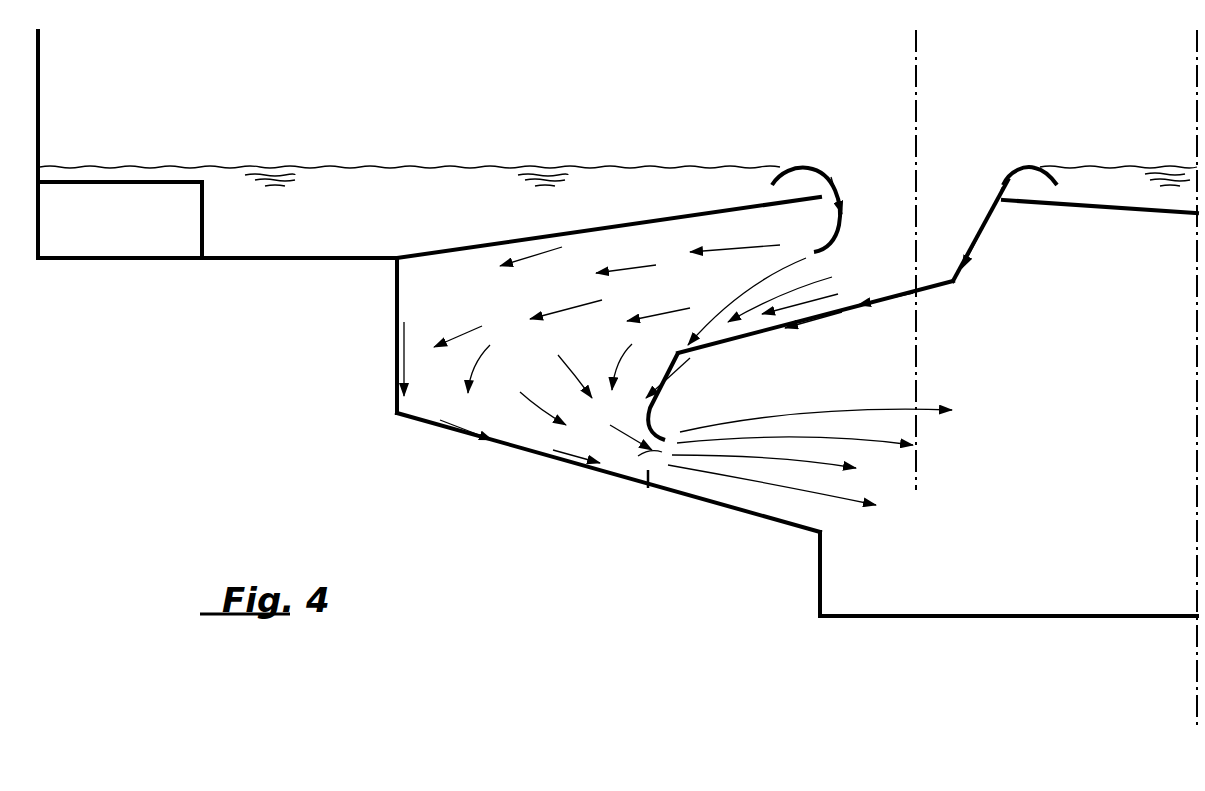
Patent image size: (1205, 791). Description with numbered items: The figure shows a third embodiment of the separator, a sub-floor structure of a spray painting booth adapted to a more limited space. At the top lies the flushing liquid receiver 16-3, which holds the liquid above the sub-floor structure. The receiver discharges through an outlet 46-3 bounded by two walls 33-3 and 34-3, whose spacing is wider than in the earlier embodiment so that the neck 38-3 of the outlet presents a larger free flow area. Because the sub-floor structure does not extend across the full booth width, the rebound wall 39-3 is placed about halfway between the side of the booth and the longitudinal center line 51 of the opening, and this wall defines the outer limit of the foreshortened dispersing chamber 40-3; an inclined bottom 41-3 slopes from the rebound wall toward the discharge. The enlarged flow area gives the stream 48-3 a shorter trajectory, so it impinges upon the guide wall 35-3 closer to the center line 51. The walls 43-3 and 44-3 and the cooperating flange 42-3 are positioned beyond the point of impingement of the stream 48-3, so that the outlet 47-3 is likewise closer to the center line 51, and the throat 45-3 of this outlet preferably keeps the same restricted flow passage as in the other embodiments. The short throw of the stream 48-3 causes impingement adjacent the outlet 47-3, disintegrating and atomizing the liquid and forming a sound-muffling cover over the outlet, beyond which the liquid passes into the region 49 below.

The flushing liquid receiver 16-3 is at (390, 186).
The wall of the outlet 33-3 is at (830, 247).
The wall of the outlet 34-3 is at (990, 232).
The guide wall 35-3 is at (827, 305).
The neck 38-3 is at (826, 278).
The rebound wall 39-3 is at (400, 287).
The dispersing chamber 40-3 is at (568, 355).
The inclined bottom wall 41-3 is at (520, 452).
The flange 42-3 is at (652, 478).
The wall 43-3 is at (665, 375).
The wall 44-3 is at (655, 421).
The throat 45-3 is at (645, 478).
The outlet 46-3 is at (948, 172).
The outlet 47-3 is at (624, 423).
The stream 48-3 is at (758, 320).
The discharge chamber 49 is at (1037, 573).
The longitudinal center line 51 is at (920, 355).